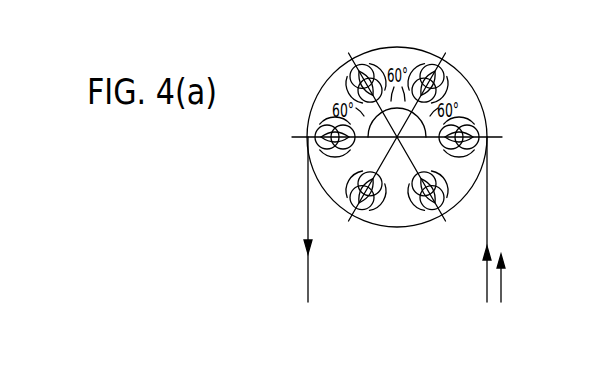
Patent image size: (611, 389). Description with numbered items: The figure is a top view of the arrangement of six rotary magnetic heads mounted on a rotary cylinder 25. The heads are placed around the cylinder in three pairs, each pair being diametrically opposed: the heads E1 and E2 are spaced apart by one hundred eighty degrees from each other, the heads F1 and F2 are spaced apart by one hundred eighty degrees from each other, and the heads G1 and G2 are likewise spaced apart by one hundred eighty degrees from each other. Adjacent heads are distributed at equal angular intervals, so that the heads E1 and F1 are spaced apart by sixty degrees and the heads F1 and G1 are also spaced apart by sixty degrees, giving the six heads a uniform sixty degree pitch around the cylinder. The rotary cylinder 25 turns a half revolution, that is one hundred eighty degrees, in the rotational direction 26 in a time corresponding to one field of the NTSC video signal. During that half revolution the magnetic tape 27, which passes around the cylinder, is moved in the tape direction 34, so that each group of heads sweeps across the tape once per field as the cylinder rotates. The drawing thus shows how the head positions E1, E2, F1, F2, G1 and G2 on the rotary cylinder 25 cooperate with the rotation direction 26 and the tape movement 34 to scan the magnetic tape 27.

The rotary cylinder 25 is at (388, 228).
The direction 26 is at (451, 85).
The magnetic tape 27 is at (488, 193).
The direction 34 is at (501, 277).
The head E1 is at (308, 140).
The head E2 is at (487, 130).
The head F1 is at (352, 62).
The head F2 is at (444, 223).
The head G1 is at (437, 55).
The head G2 is at (347, 224).